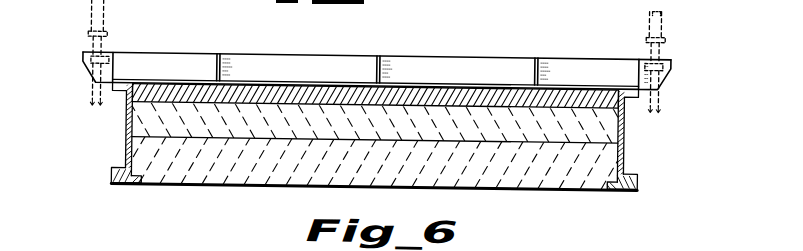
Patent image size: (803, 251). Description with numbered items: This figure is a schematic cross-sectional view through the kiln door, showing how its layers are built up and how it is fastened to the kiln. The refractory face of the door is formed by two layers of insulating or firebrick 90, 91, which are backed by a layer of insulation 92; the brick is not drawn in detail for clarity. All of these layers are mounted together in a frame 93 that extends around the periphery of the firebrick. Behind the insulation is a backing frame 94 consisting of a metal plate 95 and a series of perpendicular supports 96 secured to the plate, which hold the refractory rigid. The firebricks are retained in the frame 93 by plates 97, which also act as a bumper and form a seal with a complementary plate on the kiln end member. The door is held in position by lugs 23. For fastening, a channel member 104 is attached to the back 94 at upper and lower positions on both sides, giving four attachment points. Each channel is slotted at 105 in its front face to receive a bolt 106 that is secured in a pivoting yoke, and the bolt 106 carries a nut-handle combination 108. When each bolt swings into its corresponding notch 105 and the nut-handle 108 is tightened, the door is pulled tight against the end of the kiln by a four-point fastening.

The lug 23 is at (108, 41).
The firebrick layer 90 is at (517, 183).
The firebrick layer 91 is at (612, 121).
The insulation layer 92 is at (253, 84).
The frame 93 is at (126, 155).
The backing frame 94 is at (413, 71).
The metal plate 95 is at (488, 82).
The perpendicular support 96 is at (377, 68).
The plate 97 is at (124, 186).
The channel member 104 is at (92, 65).
The slot 105 is at (86, 53).
The bolt 106 is at (88, 101).
The nut-handle combination 108 is at (665, 15).